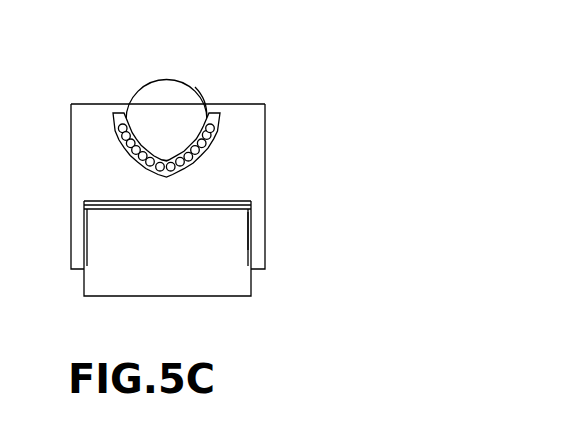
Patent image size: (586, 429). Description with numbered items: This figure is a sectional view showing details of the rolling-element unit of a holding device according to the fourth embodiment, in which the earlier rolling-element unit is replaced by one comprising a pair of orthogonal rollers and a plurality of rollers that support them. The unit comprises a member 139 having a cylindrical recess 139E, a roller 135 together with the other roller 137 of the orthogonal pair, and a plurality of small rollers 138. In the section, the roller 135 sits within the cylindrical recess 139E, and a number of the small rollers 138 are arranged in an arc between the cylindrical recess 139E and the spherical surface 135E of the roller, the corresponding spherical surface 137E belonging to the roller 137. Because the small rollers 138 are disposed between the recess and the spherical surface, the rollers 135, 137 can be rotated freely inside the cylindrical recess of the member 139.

The roller 135 is at (162, 92).
The spherical surface 135E is at (198, 92).
The roller 137 is at (213, 275).
The spherical surface 137E is at (218, 212).
The small rollers 138 is at (215, 130).
The member 139 is at (82, 122).
The cylindrical recess 139E is at (122, 143).